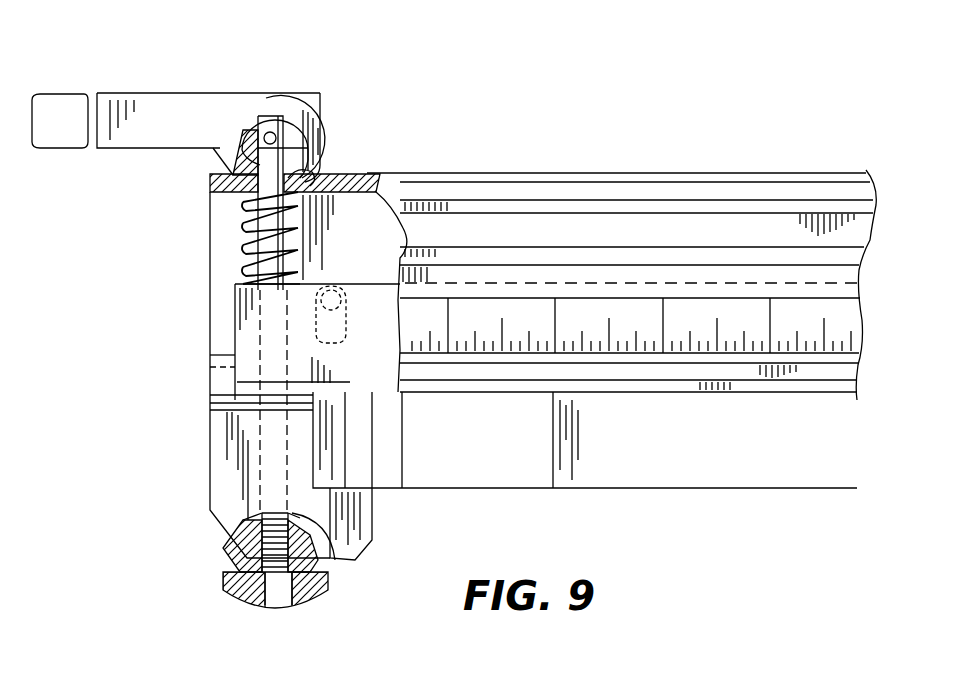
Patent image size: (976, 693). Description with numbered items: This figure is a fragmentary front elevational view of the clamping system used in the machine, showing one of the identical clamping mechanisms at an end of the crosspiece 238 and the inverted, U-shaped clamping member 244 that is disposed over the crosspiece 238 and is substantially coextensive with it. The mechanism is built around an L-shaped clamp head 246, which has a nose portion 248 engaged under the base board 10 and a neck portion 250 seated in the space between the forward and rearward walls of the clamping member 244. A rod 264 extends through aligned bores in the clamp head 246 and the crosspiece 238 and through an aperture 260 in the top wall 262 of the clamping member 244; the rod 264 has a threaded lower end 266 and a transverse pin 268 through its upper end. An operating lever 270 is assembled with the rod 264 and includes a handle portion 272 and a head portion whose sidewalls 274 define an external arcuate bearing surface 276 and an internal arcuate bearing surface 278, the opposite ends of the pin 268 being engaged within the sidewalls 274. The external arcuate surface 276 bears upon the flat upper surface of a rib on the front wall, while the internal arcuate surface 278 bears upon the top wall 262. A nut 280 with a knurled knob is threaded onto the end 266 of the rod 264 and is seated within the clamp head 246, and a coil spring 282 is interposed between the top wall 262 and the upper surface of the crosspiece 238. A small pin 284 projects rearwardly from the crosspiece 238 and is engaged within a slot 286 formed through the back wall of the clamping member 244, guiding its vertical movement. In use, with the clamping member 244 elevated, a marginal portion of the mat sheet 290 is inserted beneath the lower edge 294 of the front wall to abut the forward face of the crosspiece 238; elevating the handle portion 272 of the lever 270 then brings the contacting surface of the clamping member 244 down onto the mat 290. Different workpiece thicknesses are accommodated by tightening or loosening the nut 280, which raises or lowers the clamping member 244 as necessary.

The base board 10 is at (700, 480).
The crosspiece 238 is at (372, 307).
The clamping member 244 is at (622, 118).
The clamp head 246 is at (220, 483).
The nose portion 248 is at (372, 520).
The neck portion 250 is at (220, 378).
The aperture 260 is at (332, 180).
The top wall 262 is at (420, 176).
The rod 264 is at (250, 266).
The threaded lower end 266 is at (333, 562).
The transverse pin 268 is at (268, 130).
The operating lever 270 is at (217, 84).
The handle portion 272 is at (135, 150).
The sidewalls 274 is at (290, 110).
The external arcuate bearing surface 276 is at (325, 170).
The internal arcuate bearing surface 278 is at (245, 132).
The nut 280 is at (264, 600).
The coil spring 282 is at (250, 232).
The small pin 284 is at (330, 285).
The slot 286 is at (330, 345).
The mat sheet 290 is at (848, 392).
The lower edge 294 is at (855, 362).